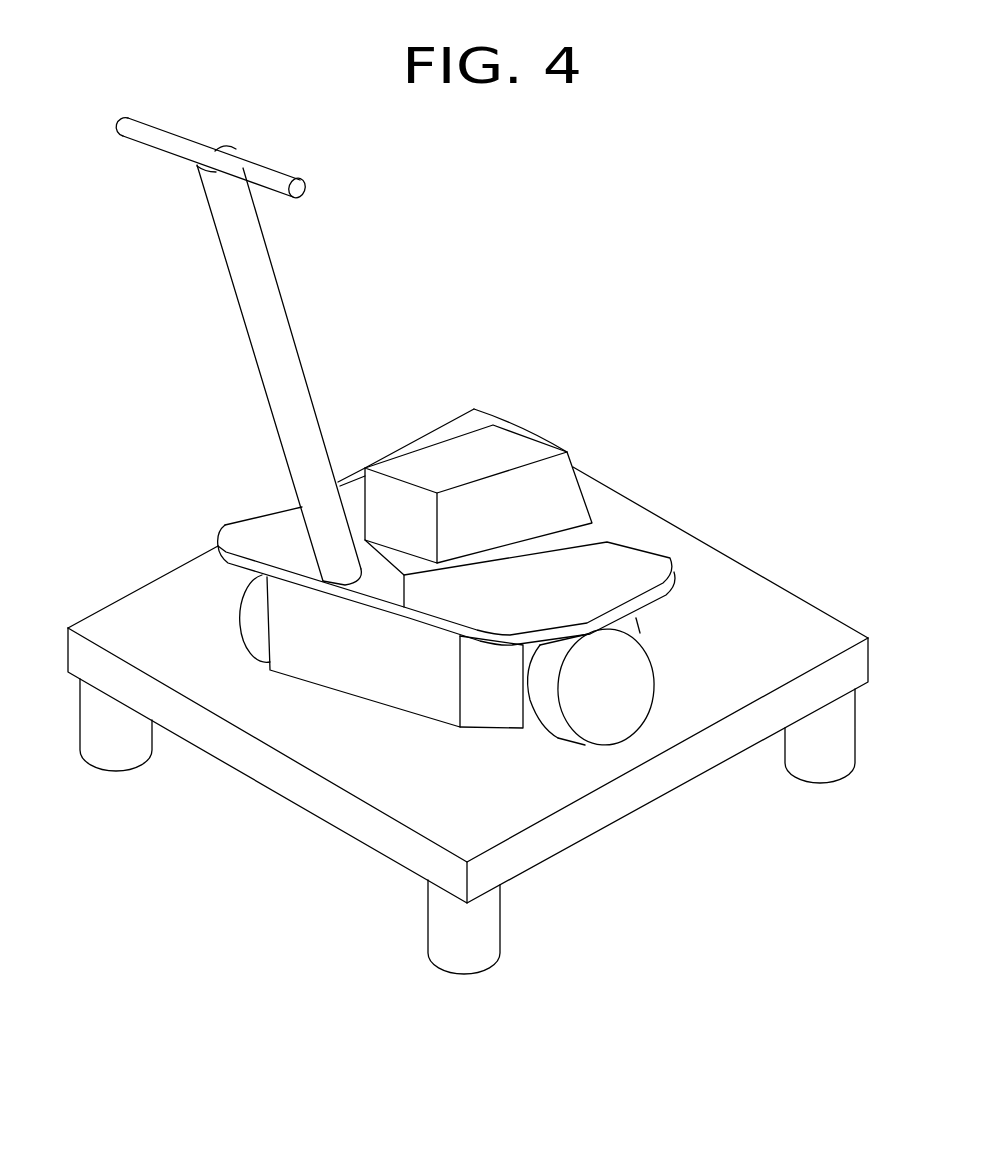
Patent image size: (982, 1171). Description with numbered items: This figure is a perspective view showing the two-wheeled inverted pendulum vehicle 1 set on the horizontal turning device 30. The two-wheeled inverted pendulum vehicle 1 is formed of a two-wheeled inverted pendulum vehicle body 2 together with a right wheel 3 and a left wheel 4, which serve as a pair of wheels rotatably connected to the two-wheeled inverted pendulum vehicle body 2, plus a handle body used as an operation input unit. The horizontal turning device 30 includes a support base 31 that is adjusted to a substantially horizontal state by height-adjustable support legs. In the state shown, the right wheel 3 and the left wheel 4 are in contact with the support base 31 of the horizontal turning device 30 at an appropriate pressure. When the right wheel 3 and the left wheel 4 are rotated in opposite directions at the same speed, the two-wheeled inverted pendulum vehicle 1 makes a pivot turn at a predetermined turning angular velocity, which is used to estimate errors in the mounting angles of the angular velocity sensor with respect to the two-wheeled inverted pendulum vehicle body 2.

The two-wheeled inverted pendulum vehicle 1 is at (333, 233).
The two-wheeled inverted pendulum vehicle body 2 is at (382, 680).
The right wheel 3 is at (257, 618).
The left wheel 4 is at (636, 687).
The horizontal turning device 30 is at (476, 691).
The support base 31 is at (796, 534).